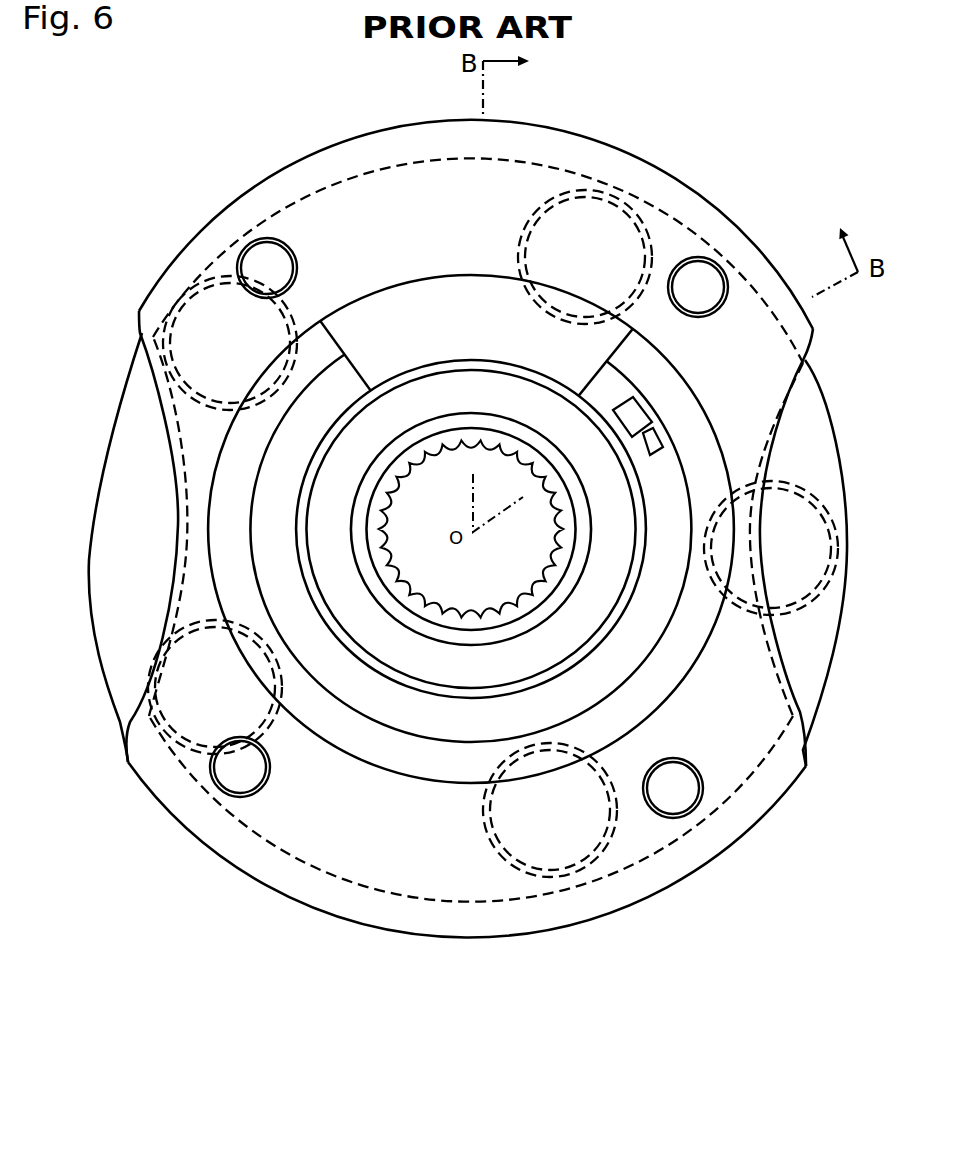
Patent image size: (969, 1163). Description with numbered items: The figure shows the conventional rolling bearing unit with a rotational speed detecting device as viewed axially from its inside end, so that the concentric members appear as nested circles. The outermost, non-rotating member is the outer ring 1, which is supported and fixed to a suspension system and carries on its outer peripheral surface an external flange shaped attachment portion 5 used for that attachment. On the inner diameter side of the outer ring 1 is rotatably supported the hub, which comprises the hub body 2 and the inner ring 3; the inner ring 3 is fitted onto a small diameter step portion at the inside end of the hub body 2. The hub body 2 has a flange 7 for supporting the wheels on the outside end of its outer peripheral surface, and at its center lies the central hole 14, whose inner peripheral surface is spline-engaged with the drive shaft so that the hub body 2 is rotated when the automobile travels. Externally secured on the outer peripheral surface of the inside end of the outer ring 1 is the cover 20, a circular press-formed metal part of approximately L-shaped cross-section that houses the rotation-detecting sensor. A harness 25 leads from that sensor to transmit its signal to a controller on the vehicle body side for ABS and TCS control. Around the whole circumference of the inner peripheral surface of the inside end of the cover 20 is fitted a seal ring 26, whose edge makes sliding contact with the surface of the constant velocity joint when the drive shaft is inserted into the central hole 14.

The outer ring 1 is at (182, 477).
The hub body 2 is at (117, 593).
The inner ring 3 is at (397, 413).
The attachment portion 5 is at (638, 168).
The flange 7 is at (803, 640).
The central hole 14 is at (466, 608).
The cover 20 is at (438, 307).
The harness 25 is at (657, 440).
The seal ring 26 is at (598, 640).